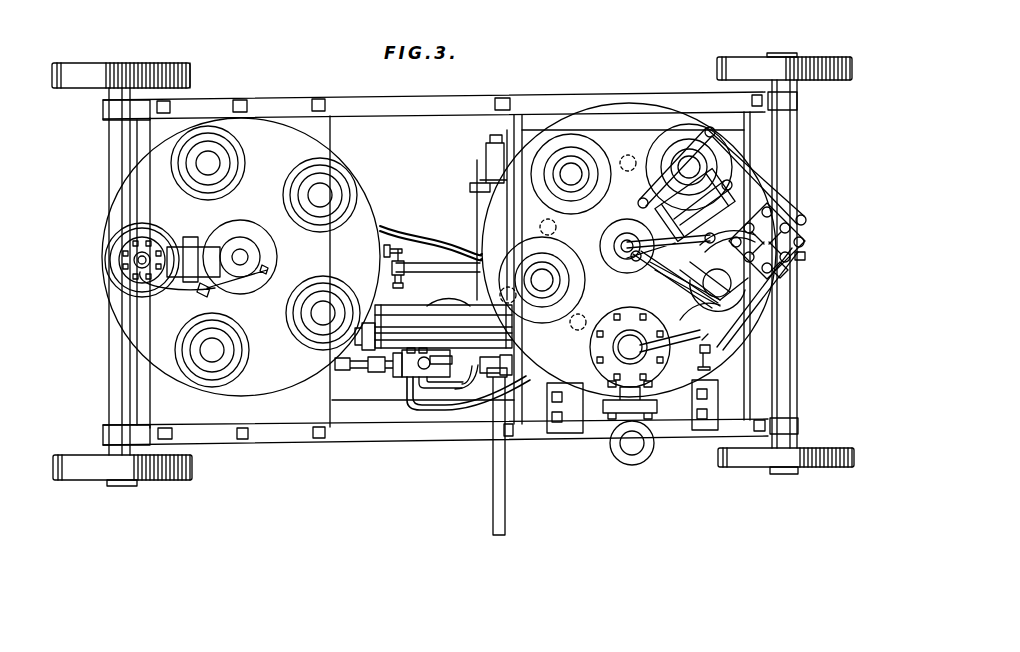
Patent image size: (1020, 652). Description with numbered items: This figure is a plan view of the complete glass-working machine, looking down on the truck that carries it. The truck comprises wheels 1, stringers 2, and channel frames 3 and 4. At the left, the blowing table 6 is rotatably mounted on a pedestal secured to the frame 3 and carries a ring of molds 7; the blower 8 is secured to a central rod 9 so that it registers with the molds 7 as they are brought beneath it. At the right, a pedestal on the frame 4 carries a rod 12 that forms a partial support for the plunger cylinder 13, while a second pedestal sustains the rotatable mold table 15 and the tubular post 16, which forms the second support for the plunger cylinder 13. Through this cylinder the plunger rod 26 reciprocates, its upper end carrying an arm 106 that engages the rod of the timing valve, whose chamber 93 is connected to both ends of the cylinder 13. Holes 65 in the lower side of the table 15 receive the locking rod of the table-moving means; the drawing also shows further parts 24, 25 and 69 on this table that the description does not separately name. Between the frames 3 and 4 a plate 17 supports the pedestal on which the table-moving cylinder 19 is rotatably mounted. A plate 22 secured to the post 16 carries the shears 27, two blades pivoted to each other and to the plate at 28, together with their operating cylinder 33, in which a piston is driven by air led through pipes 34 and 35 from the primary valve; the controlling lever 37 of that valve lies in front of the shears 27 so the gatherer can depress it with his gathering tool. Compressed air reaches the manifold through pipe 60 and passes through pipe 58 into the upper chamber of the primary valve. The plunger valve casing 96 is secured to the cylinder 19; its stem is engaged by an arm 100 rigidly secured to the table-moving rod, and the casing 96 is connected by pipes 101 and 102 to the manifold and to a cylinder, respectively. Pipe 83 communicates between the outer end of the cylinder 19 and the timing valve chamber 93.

The wheels 1 is at (74, 67).
The stringers 2 is at (404, 86).
The channel frame 3 is at (297, 412).
The channel frame 4 is at (702, 97).
The blowing table 6 is at (127, 322).
The molds 7 is at (300, 172).
The blower 8 is at (120, 258).
The central rod 9 is at (240, 256).
The rod 12 is at (642, 455).
The plunger cylinder 13 is at (608, 352).
The rotatable mold table 15 is at (755, 330).
The tubular post 16 is at (604, 242).
The plate 17 is at (416, 305).
The table-moving cylinder 19 is at (462, 312).
The plate 22 is at (750, 218).
The bracket 24 is at (800, 250).
The rollers 25 is at (536, 244).
The plunger rod 26 is at (600, 347).
The shears 27 is at (742, 285).
The pivot 28 is at (790, 222).
The cylinder 33 is at (686, 212).
The pipe 34 is at (745, 190).
The pipe 35 is at (730, 150).
The controlling lever 37 is at (725, 340).
The pipe 58 is at (655, 215).
The pipe 60 is at (492, 492).
The holes 65 is at (566, 135).
The roller 69 is at (645, 160).
The pipe 83 is at (443, 215).
The timing valve chamber 93 is at (735, 337).
The valve casing 96 is at (405, 380).
The arm 100 is at (345, 372).
The pipe 101 is at (478, 374).
The pipe 102 is at (450, 415).
The arm 106 is at (712, 355).